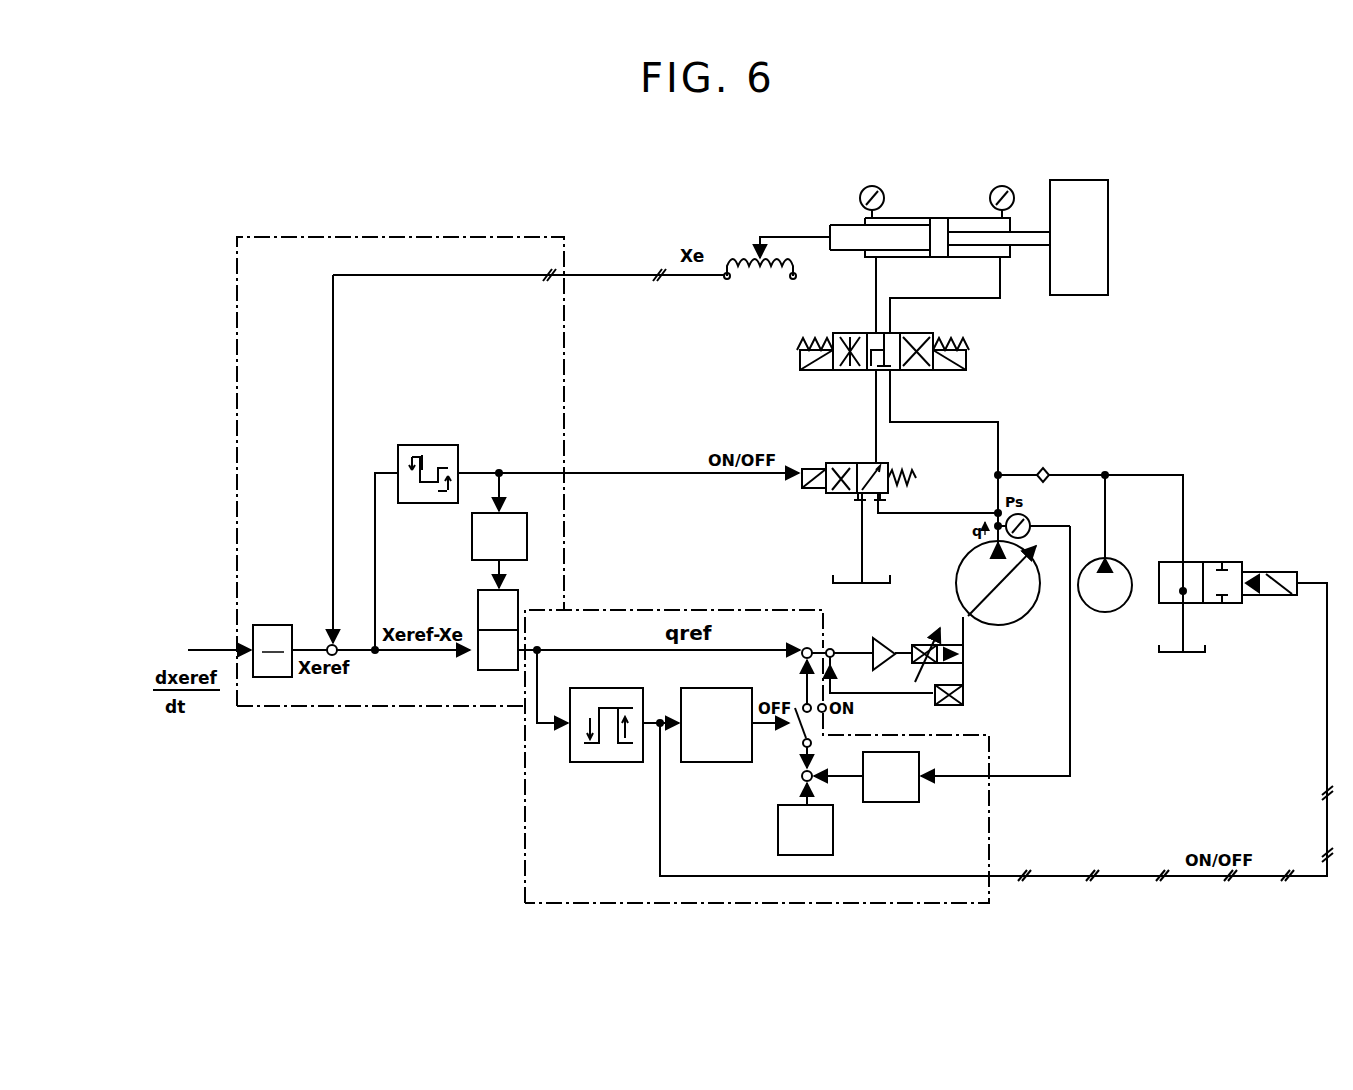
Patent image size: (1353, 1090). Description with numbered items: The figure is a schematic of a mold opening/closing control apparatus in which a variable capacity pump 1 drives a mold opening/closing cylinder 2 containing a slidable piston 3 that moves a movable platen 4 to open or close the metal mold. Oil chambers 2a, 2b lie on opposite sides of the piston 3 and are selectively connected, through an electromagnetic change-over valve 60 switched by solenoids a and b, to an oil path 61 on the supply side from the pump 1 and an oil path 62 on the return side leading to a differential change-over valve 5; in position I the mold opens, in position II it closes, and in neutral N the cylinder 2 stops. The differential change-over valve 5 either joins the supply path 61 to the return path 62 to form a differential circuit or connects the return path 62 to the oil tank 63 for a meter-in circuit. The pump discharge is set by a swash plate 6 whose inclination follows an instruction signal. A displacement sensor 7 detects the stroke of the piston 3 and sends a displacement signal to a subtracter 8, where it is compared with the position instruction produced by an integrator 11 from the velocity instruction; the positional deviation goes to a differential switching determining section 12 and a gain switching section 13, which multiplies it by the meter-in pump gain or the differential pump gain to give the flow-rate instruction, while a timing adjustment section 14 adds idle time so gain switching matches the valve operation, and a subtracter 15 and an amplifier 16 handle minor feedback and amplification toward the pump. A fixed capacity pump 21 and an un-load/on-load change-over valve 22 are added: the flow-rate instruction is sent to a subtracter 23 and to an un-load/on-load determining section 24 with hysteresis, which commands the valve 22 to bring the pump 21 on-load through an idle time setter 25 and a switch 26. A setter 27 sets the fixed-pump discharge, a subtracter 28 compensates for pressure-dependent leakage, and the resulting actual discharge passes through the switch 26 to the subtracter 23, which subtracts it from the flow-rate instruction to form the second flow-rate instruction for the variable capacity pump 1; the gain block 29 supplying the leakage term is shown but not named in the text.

The variable capacity pump 1 is at (1020, 617).
The mold opening/closing cylinder 2 is at (940, 185).
The oil chamber 2a is at (893, 222).
The oil chamber 2b is at (980, 224).
The piston 3 is at (937, 217).
The movable platen 4 is at (1088, 180).
The differential change-over valve 5 is at (818, 465).
The swash plate 6 is at (963, 690).
The displacement sensor 7 is at (741, 256).
The subtracter 8 is at (337, 645).
The integrator 11 is at (275, 624).
The differential switching determining section 12 is at (408, 445).
The gain switching section 13 is at (478, 592).
The timing adjustment section 14 is at (521, 515).
The subtracter 15 is at (838, 650).
The amplifier 16 is at (880, 665).
The fixed capacity pump 21 is at (1110, 612).
The un-load/on-load change-over valve 22 is at (1218, 560).
The subtracter 23 is at (806, 647).
The un-load/on-load determining section 24 is at (598, 762).
The idle time setter 25 is at (697, 688).
The switch 26 is at (797, 705).
The setter 27 is at (833, 845).
The subtracter 28 is at (818, 780).
The gain unit 29 is at (919, 760).
The electromagnetic change-over valve 60 is at (966, 360).
The oil path on a supply side 61 is at (1001, 470).
The oil path on a return side 62 is at (854, 462).
The oil tank 63 is at (884, 578).